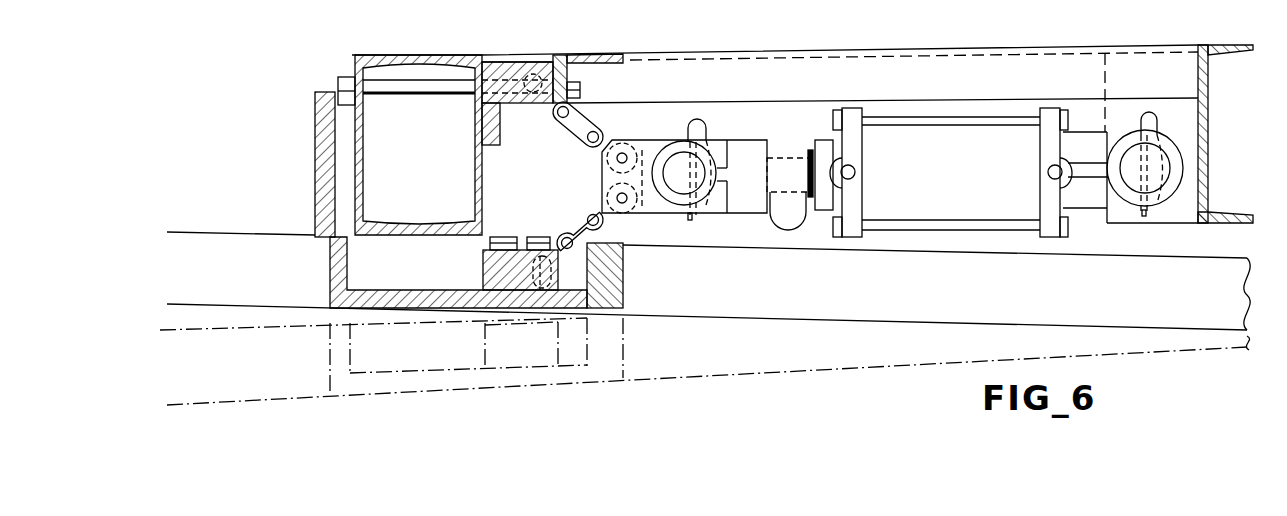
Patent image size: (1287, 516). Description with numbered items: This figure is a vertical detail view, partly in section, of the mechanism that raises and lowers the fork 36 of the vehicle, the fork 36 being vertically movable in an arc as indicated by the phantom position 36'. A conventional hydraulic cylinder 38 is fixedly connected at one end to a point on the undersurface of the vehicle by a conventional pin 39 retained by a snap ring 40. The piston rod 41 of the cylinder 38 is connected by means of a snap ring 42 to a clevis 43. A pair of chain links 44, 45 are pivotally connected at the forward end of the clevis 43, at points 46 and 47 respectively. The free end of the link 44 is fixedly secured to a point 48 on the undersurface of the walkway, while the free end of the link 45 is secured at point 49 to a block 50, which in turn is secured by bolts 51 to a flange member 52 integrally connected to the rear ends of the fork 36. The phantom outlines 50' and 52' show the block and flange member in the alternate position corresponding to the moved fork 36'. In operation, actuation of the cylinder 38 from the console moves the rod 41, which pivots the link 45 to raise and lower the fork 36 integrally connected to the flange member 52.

The fork 36 is at (708, 276).
The fork in raised position 36' is at (703, 368).
The hydraulic cylinder 38 is at (933, 163).
The pin 39 is at (1181, 163).
The snap ring 40 is at (1150, 118).
The piston rod 41 is at (788, 158).
The snap ring 42 is at (705, 130).
The clevis 43 is at (648, 146).
The chain link 44 is at (577, 128).
The chain link 45 is at (580, 212).
The pivot point 46 is at (623, 155).
The pivot point 47 is at (623, 203).
The attachment point 48 is at (532, 80).
The attachment point 49 is at (540, 267).
The block 50 is at (498, 268).
The block in raised position 50' is at (497, 343).
The bolts 51 is at (510, 234).
The flange member 52 is at (458, 272).
The flange member in raised position 52' is at (476, 355).